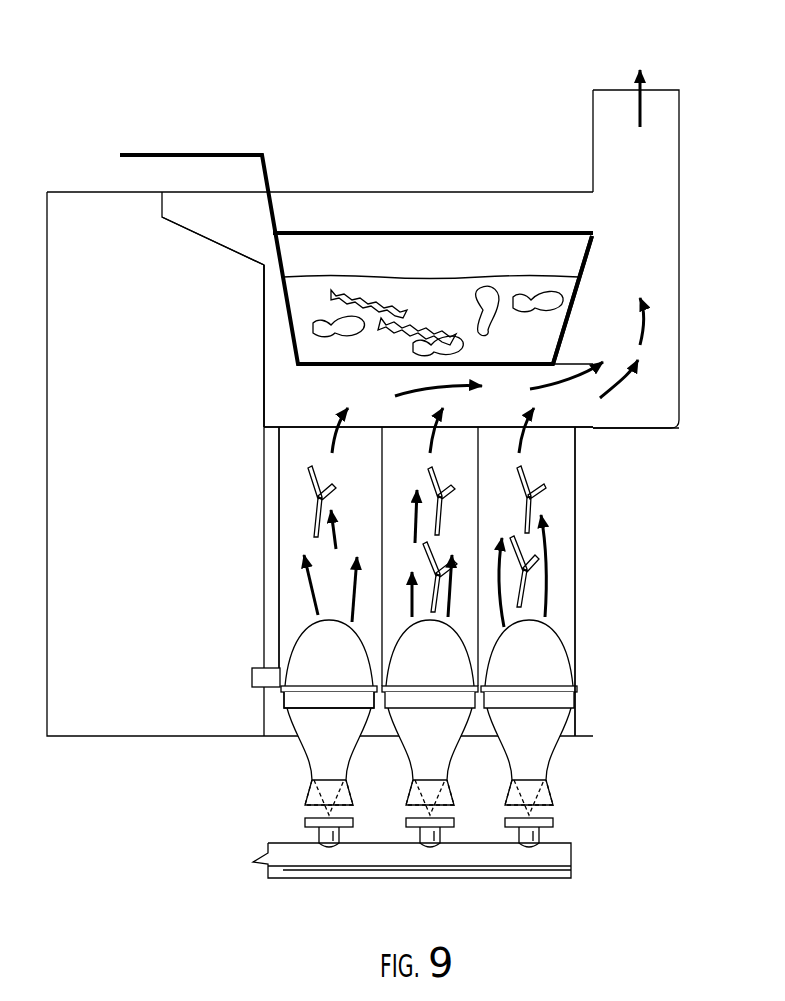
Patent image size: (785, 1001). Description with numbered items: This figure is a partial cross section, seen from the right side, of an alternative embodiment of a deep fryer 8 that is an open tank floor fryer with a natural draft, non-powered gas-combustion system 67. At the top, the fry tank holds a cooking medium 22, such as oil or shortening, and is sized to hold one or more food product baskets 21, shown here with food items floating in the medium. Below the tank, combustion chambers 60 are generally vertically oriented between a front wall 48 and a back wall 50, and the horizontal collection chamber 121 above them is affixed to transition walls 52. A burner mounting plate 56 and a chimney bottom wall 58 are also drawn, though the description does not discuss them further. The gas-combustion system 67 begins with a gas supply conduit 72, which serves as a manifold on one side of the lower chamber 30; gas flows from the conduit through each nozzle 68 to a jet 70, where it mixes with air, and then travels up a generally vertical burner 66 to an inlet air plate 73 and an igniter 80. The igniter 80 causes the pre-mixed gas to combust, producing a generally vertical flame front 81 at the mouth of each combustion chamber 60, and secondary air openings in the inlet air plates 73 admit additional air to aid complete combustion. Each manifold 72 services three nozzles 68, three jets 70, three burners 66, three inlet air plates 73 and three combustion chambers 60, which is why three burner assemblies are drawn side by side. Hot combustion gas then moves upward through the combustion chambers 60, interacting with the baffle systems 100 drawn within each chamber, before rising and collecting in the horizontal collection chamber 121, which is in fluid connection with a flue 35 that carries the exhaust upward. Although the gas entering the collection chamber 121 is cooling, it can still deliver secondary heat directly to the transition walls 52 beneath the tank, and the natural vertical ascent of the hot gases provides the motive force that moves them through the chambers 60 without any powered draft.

The deep fryer 8 is at (390, 148).
The basket 21 is at (493, 233).
The cooking medium 22 is at (575, 337).
The lower chamber 30 is at (264, 605).
The flue 35 is at (615, 125).
The front wall 48 is at (264, 265).
The back wall 50 is at (595, 284).
The transition wall 52 is at (253, 357).
The burner mounting plate 56 is at (577, 690).
The chimney bottom wall 58 is at (567, 427).
The combustion chamber 60 is at (279, 527).
The burner 66 is at (310, 764).
The natural draft gas-combustion system 67 is at (596, 792).
The nozzle 68 is at (425, 849).
The jet 70 is at (530, 813).
The gas supply conduit 72 is at (357, 862).
The inlet air plate 73 is at (282, 697).
The igniter 80 is at (253, 680).
The flame front 81 is at (345, 677).
The baffle system 100 is at (303, 484).
The horizontal collection chamber 121 is at (288, 392).